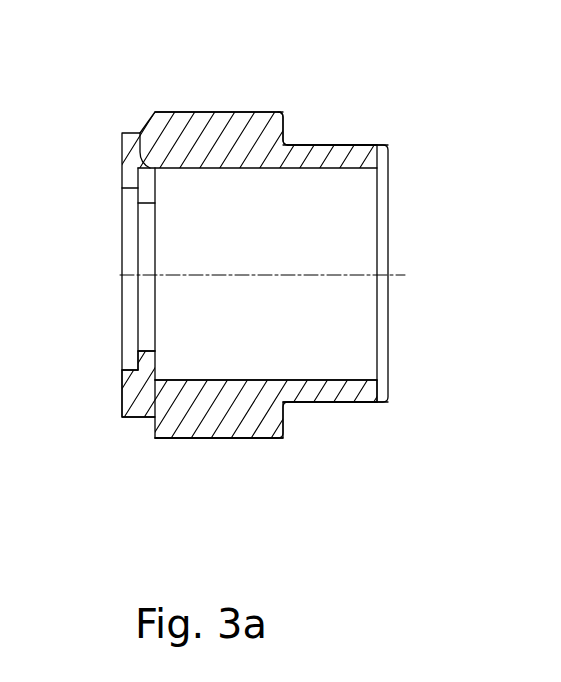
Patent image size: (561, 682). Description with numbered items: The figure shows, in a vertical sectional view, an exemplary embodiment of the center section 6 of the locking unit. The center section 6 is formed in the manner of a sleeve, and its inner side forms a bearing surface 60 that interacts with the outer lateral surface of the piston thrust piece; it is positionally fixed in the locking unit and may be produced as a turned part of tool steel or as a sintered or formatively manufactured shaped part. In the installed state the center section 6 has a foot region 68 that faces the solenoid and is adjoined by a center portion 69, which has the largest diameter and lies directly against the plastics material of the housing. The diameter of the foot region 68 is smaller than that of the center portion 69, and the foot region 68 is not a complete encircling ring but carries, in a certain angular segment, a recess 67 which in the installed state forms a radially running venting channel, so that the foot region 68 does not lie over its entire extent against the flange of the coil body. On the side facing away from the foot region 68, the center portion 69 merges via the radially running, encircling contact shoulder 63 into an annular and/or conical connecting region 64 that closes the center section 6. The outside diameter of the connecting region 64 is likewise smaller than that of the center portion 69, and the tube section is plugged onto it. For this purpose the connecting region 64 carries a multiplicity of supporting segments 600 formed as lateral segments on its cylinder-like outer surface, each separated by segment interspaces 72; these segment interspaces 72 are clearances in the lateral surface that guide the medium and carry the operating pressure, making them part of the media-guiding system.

The center section 6 is at (444, 127).
The bearing surface 60 is at (300, 372).
The contact shoulder 63 is at (290, 127).
The connecting region 64 is at (387, 441).
The recess 67 is at (130, 140).
The foot region 68 is at (133, 393).
The center portion 69 is at (283, 452).
The segment interspaces 72 is at (366, 142).
The supporting segments 600 is at (333, 143).